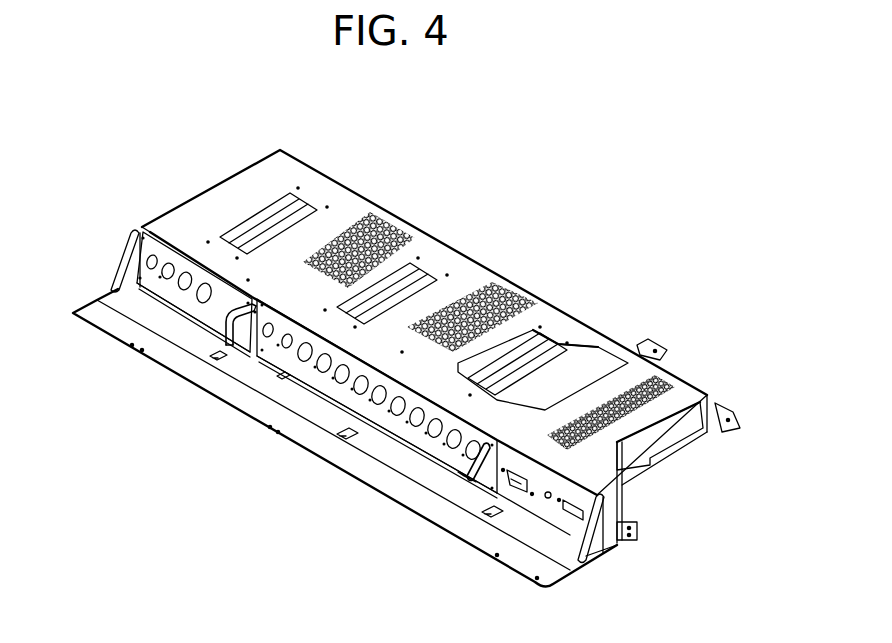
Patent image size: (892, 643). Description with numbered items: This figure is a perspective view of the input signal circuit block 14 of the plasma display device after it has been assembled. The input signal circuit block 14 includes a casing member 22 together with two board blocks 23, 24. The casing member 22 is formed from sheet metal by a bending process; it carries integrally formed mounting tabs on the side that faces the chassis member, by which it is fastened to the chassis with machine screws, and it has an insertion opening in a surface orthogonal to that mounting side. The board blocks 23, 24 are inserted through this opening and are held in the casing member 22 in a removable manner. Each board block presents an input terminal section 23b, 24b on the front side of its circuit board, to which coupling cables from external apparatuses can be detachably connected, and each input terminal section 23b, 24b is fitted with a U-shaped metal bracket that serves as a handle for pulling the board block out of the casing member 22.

The input signal circuit block 14 is at (410, 205).
The casing member 22 is at (465, 344).
The board block 23 is at (161, 301).
The input terminal section 23b is at (212, 315).
The board block 24 is at (372, 429).
The input terminal section 24b is at (422, 438).